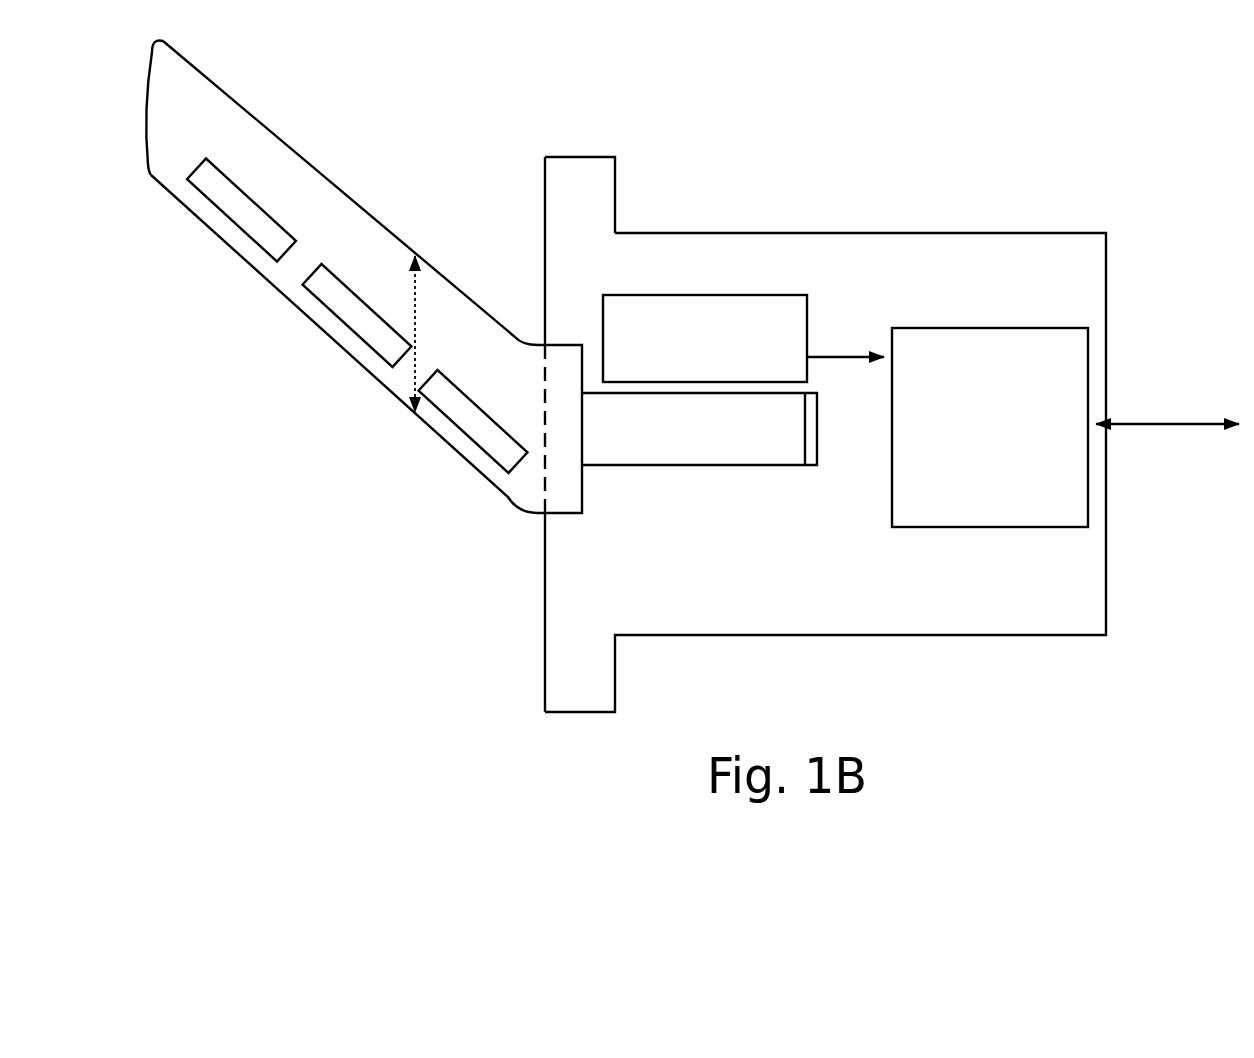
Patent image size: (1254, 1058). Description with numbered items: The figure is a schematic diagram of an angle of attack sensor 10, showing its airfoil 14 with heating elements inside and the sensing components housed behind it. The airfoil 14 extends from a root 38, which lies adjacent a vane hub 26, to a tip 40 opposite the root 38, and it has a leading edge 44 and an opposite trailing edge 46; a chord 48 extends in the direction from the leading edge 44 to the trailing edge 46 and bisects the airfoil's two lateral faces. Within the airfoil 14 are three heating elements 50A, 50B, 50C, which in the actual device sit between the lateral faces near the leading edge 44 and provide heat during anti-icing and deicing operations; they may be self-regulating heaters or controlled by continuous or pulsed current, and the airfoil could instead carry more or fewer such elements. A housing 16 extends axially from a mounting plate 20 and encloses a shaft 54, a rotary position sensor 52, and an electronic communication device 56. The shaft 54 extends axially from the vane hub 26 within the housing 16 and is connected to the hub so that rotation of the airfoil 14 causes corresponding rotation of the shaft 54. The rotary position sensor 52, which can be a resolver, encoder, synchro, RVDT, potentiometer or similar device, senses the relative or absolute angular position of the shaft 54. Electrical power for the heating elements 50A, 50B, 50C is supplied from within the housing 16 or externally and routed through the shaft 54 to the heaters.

The angle of attack sensor 10 is at (825, 373).
The airfoil 14 is at (313, 276).
The housing 16 is at (815, 233).
The mounting plate 20 is at (577, 157).
The vane hub 26 is at (568, 516).
The root 38 is at (533, 522).
The tip 40 is at (140, 138).
The leading edge 44 is at (250, 266).
The trailing edge 46 is at (250, 113).
The chord 48 is at (418, 314).
The heating element 50A is at (505, 430).
The heating element 50B is at (358, 292).
The heating element 50C is at (243, 192).
The rotary position sensor 52 is at (735, 295).
The shaft 54 is at (755, 465).
The electronic communication device 56 is at (1065, 427).